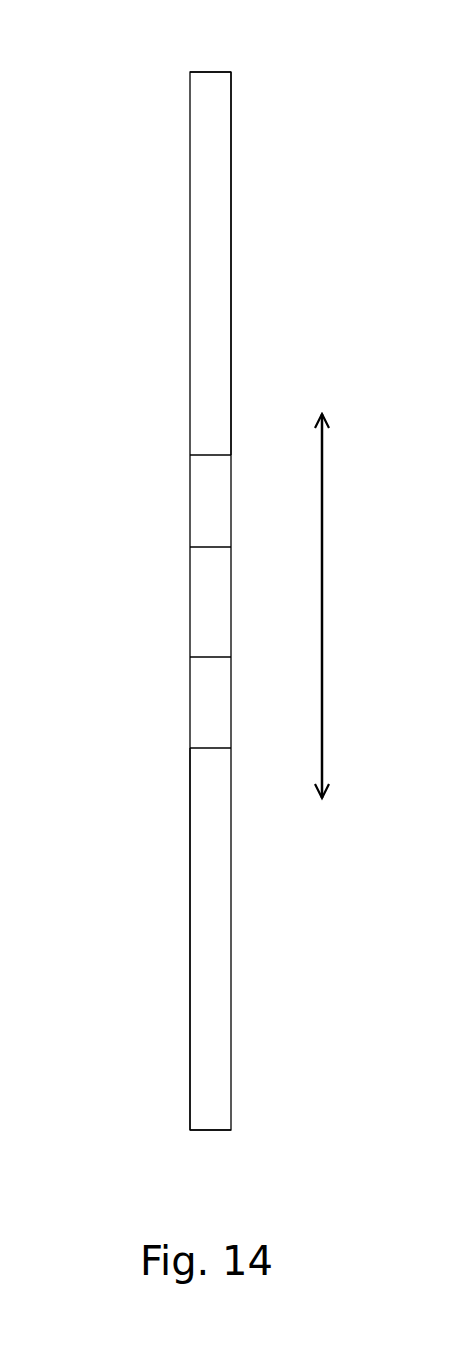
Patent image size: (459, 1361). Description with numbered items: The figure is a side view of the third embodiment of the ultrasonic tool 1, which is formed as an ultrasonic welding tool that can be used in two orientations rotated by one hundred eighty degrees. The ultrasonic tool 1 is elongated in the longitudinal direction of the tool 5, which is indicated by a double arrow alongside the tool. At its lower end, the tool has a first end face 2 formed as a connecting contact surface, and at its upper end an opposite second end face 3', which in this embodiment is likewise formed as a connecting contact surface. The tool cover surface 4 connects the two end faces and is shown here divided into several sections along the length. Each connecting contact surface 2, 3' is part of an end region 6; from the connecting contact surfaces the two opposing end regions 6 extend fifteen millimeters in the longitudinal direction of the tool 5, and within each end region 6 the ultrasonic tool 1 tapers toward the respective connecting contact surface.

The ultrasonic tool 1 is at (107, 212).
The first end face 2 is at (212, 1139).
The second end face 3' is at (246, 55).
The tool cover surface 4 is at (213, 275).
The longitudinal direction of the tool 5 is at (323, 596).
The end region 6 is at (289, 240).